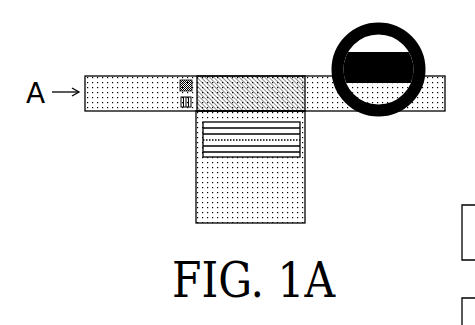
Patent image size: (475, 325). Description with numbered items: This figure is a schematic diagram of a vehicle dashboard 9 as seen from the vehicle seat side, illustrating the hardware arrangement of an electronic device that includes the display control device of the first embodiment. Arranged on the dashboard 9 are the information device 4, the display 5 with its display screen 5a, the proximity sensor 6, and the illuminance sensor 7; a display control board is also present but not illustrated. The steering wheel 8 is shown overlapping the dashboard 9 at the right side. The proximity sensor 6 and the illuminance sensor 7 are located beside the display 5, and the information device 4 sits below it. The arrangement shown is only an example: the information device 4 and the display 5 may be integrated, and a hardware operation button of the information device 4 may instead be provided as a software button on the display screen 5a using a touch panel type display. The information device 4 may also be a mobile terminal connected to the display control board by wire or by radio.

The information device 4 is at (300, 142).
The display 5 is at (265, 77).
The display screen 5a is at (240, 77).
The proximity sensor 6 is at (183, 79).
The illuminance sensor 7 is at (176, 111).
The steering wheel 8 is at (403, 27).
The dashboard 9 is at (125, 76).